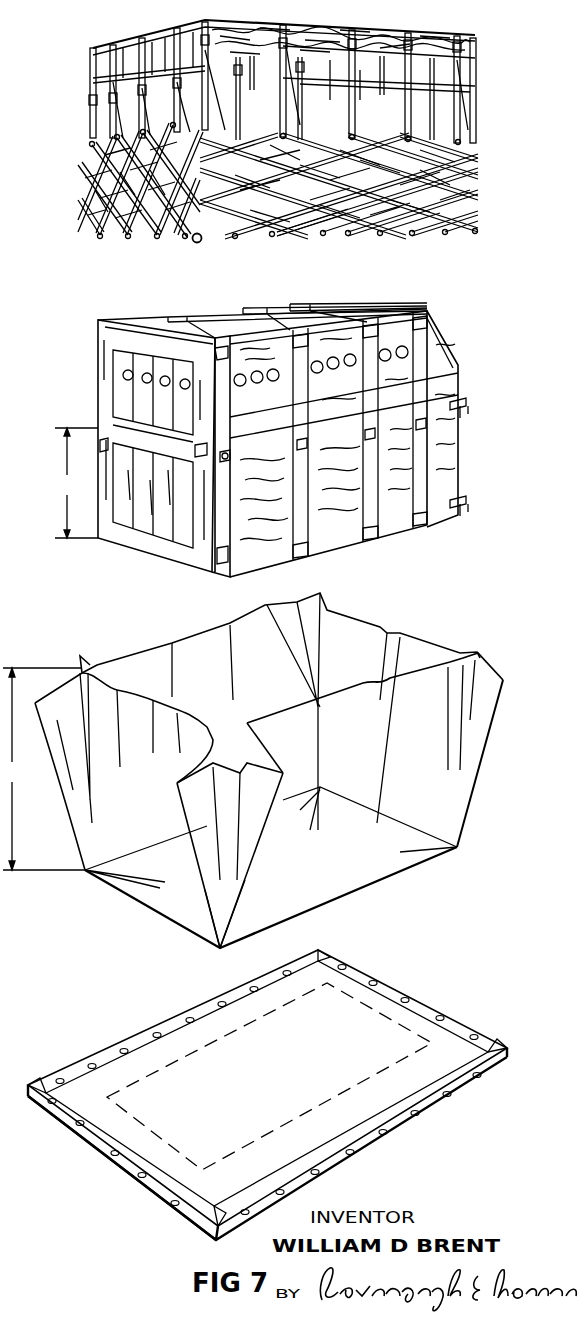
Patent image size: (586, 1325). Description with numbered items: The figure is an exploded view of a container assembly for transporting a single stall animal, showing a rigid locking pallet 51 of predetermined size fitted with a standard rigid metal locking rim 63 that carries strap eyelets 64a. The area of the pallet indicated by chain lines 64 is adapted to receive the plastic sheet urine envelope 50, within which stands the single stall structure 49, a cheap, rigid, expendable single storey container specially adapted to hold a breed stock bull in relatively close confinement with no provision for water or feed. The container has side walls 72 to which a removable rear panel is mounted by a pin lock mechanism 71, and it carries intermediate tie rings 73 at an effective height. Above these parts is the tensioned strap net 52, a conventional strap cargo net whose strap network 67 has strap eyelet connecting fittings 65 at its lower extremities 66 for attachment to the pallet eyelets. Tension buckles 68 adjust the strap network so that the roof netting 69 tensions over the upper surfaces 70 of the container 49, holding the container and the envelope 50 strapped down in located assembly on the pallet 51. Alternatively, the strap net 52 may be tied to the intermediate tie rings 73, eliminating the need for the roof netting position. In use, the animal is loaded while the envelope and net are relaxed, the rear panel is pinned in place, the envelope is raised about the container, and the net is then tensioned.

The single stall structure 49 is at (280, 432).
The urine envelope 50 is at (474, 767).
The locking pallet 51 is at (267, 1092).
The tensioned strap net 52 is at (274, 149).
The locking rim 63 is at (383, 988).
The chain lines 64 is at (160, 1063).
The strap eyelets 64a is at (100, 1150).
The strap eyelet connecting fittings 65 is at (199, 242).
The lower extremities 66 is at (292, 234).
The strap network 67 is at (78, 165).
The tension buckles 68 is at (478, 70).
The roof netting 69 is at (252, 60).
The upper surfaces 70 is at (178, 313).
The pin lock mechanism 71 is at (468, 404).
The side walls 72 is at (462, 456).
The intermediate tie rings 73 is at (228, 460).